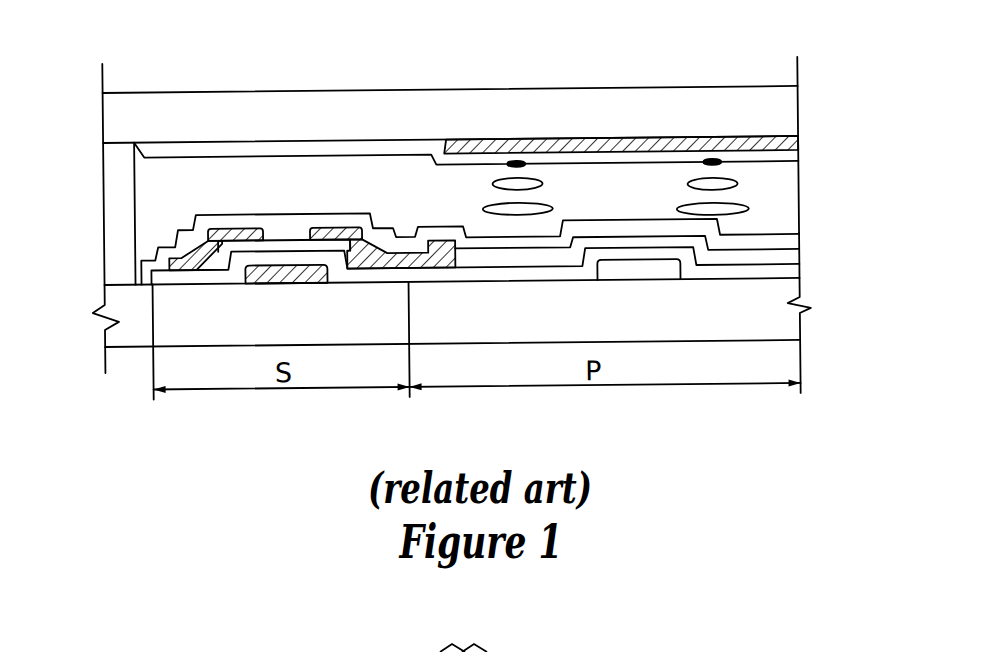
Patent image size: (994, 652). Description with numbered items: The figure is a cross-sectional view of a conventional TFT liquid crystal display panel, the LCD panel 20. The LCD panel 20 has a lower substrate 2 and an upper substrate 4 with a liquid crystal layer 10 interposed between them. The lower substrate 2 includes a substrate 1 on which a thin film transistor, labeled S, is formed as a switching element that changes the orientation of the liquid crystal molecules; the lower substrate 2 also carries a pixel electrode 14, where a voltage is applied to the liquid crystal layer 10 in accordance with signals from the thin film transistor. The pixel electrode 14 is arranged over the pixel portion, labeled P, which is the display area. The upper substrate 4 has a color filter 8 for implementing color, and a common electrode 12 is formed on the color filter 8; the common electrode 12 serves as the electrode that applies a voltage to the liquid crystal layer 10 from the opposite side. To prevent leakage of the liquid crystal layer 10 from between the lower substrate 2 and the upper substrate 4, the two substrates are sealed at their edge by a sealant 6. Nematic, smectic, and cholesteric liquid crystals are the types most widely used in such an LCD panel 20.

The LCD panel 20 is at (271, 69).
The substrate 1 is at (485, 122).
The upper substrate 4 is at (810, 86).
The color filter 8 is at (660, 141).
The common electrode 12 is at (768, 157).
The liquid crystal layer 10 is at (810, 162).
The sealant 6 is at (110, 209).
The pixel electrode 14 is at (790, 257).
The lower substrate 2 is at (810, 237).